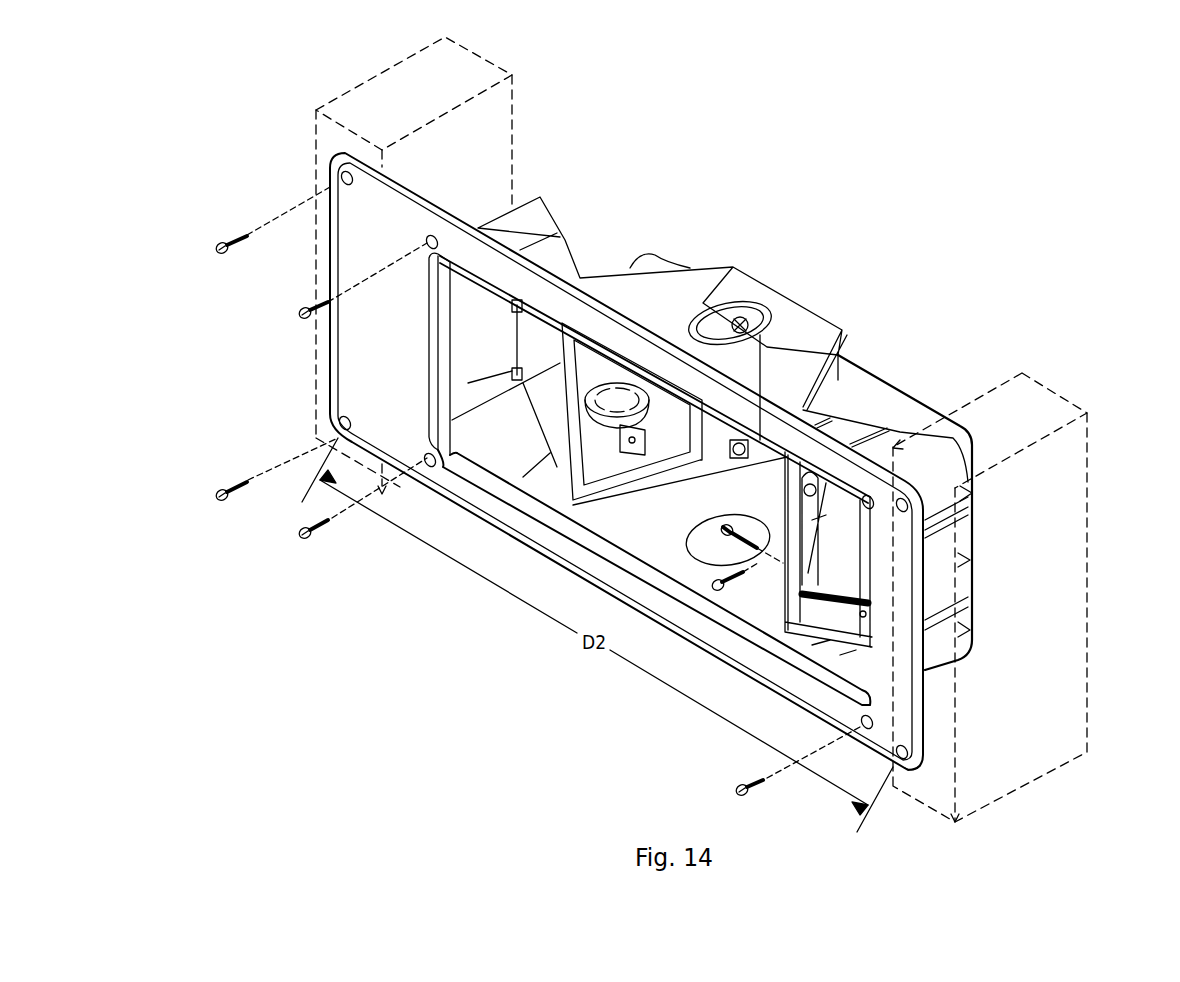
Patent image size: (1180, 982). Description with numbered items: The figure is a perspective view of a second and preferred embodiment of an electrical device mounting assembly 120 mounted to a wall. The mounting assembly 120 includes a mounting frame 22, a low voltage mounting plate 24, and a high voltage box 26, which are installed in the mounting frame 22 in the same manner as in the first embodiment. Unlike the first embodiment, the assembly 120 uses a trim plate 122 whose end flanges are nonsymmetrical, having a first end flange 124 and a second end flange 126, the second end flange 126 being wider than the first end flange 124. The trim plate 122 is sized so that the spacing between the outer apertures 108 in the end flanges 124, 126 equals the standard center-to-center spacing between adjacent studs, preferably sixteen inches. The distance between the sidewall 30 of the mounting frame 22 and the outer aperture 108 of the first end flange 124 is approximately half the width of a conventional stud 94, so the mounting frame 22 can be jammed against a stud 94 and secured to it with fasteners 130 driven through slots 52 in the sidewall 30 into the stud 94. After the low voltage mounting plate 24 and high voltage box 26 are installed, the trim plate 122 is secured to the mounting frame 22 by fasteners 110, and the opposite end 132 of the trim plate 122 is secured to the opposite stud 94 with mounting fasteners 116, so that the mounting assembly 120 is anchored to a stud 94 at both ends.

The mounting frame 22 is at (912, 397).
The low voltage mounting plate 24 is at (803, 620).
The high voltage box 26 is at (633, 485).
The side wall 30 is at (715, 391).
The slot 52 is at (970, 535).
The stud 94 is at (497, 128).
The outer aperture 108 is at (338, 427).
The fastener 110 is at (317, 533).
The mounting fastener 116 is at (228, 240).
The electrical device mounting assembly 120 is at (868, 232).
The trim plate 122 is at (920, 763).
The first end flange 124 is at (846, 549).
The second end flange 126 is at (626, 461).
The fastener 130 is at (722, 546).
The opposite end 132 is at (330, 290).